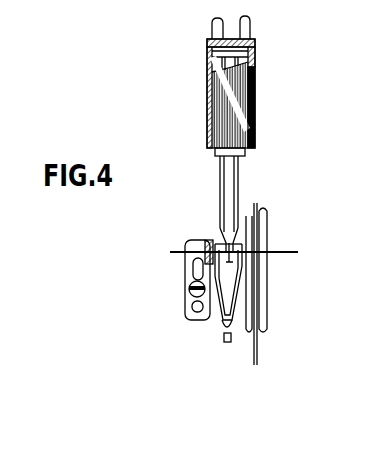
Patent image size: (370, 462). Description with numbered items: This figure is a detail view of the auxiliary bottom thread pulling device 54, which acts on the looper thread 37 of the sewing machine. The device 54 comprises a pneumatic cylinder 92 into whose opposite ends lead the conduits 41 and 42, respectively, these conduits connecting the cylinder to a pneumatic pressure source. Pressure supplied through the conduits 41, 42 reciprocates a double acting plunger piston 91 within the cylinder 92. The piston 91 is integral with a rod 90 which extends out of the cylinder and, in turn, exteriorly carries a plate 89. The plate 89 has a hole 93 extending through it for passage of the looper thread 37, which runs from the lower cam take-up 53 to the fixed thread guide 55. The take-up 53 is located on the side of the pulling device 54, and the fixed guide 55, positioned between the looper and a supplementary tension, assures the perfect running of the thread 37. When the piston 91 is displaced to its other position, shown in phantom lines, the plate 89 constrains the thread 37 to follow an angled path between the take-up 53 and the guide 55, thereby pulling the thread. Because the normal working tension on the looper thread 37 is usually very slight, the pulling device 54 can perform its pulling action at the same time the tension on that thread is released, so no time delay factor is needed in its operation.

The looper thread 37 is at (283, 251).
The conduit 41 is at (214, 21).
The conduit 42 is at (251, 27).
The lower cam take-up 53 is at (248, 282).
The auxiliary bottom thread pulling device 54 is at (207, 96).
The fixed thread guide 55 is at (192, 258).
The plate 89 is at (226, 245).
The rod 90 is at (222, 162).
The double acting plunger piston 91 is at (251, 67).
The pneumatic cylinder 92 is at (253, 107).
The hole 93 is at (242, 240).